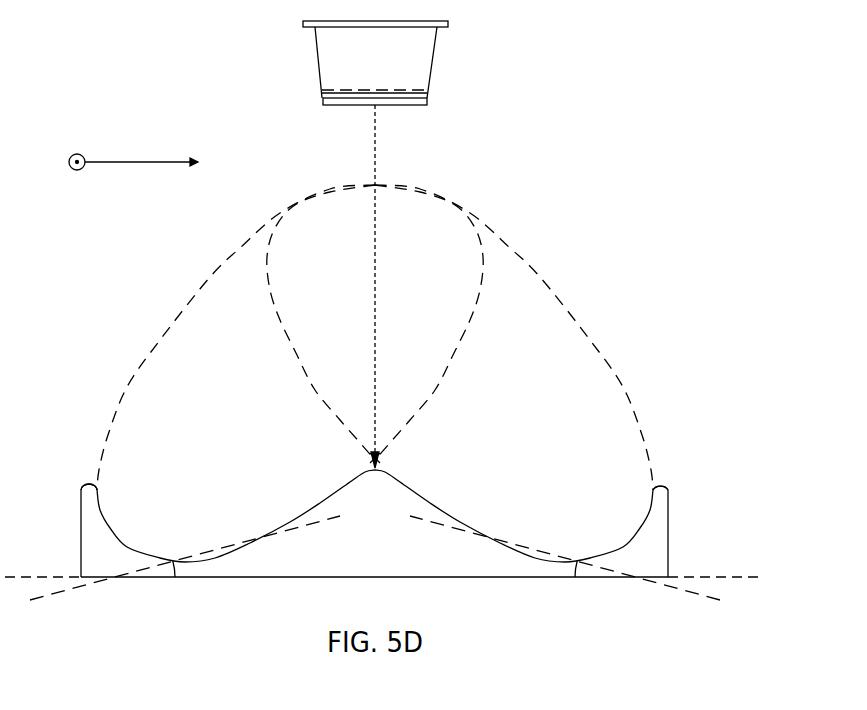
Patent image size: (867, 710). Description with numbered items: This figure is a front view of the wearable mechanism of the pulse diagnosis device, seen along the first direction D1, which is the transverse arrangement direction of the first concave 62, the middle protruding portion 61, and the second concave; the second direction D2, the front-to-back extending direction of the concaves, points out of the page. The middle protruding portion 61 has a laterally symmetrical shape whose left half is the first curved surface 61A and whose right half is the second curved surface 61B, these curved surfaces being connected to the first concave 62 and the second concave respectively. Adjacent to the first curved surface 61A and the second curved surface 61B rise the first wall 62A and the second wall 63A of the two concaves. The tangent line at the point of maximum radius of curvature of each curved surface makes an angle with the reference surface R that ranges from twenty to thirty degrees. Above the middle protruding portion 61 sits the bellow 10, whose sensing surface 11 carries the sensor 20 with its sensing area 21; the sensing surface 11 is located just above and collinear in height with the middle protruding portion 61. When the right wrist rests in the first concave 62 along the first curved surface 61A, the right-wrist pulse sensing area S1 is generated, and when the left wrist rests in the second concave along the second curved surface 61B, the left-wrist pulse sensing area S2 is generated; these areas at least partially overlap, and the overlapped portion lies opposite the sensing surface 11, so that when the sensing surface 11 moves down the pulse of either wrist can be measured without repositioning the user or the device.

The bellow 10 is at (393, 38).
The sensing surface 11 is at (403, 90).
The sensor 20 is at (434, 115).
The sensing area 21 is at (402, 105).
The middle protruding portion 61 is at (375, 494).
The first curved surface 61A is at (318, 503).
The second curved surface 61B is at (430, 503).
The first concave 62 is at (125, 548).
The first wall 62A is at (90, 512).
The second wall 63A is at (660, 512).
The right-wrist pulse sensing area S1 is at (234, 327).
The left-wrist pulse sensing area S2 is at (547, 327).
The first direction D1 is at (145, 146).
The second direction D2 is at (79, 147).
The reference surface R is at (430, 612).